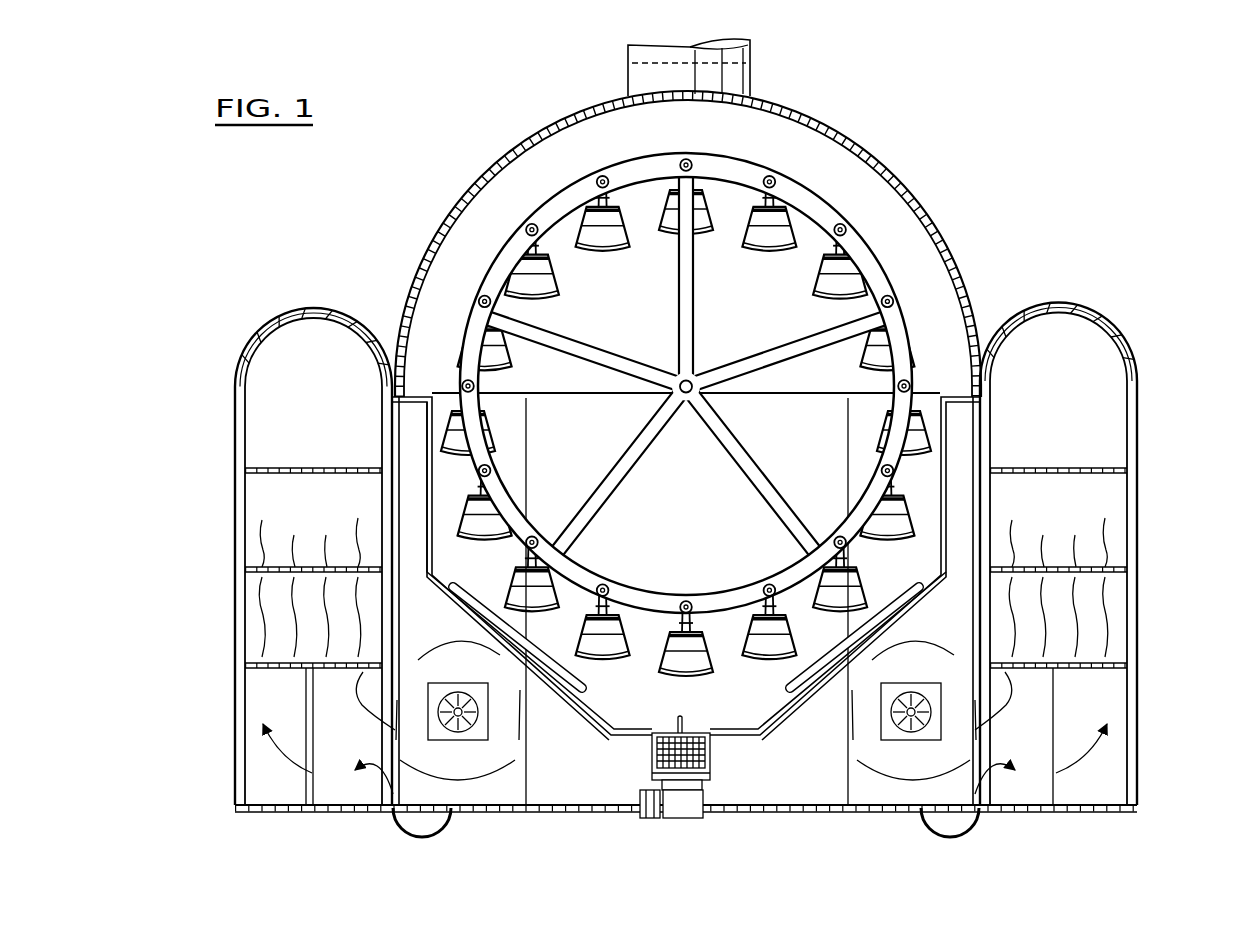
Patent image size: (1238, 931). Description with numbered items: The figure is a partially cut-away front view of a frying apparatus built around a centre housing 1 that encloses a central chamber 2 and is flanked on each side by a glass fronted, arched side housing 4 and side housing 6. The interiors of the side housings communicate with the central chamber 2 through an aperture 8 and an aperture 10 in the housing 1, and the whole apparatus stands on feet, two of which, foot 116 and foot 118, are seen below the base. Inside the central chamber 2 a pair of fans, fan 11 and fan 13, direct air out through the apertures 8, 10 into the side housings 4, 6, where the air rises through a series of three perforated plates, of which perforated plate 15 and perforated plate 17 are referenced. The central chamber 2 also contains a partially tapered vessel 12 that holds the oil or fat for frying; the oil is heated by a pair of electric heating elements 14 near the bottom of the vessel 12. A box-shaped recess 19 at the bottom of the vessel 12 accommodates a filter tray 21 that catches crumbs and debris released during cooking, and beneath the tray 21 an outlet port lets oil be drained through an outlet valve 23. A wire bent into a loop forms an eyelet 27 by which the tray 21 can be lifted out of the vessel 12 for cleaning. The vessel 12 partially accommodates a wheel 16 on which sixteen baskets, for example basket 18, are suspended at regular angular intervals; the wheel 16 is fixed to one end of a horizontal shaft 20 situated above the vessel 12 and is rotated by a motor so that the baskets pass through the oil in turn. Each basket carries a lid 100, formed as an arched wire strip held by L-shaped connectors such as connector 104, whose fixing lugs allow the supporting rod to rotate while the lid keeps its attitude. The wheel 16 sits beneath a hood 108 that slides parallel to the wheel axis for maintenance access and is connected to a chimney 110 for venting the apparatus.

The centre housing 1 is at (389, 311).
The central chamber 2 is at (577, 750).
The side housing 4 is at (237, 357).
The side housing 6 is at (1137, 352).
The aperture 8 is at (340, 746).
The aperture 10 is at (1027, 766).
The fan 11 is at (458, 702).
The vessel 12 is at (784, 716).
The fan 13 is at (909, 702).
The electric heating element 14 is at (470, 603).
The perforated plate 15 is at (1105, 569).
The wheel 16 is at (565, 208).
The perforated plate 17 is at (262, 664).
The basket 18 is at (656, 233).
The box-shaped recess 19 is at (712, 770).
The horizontal shaft 20 is at (688, 395).
The filter tray 21 is at (704, 733).
The outlet valve 23 is at (690, 820).
The eyelet 27 is at (678, 720).
The lid 100 is at (762, 203).
The L-shaped connector 104 is at (789, 208).
The hood 108 is at (918, 207).
The chimney 110 is at (752, 46).
The foot 116 is at (440, 822).
The foot 118 is at (932, 822).